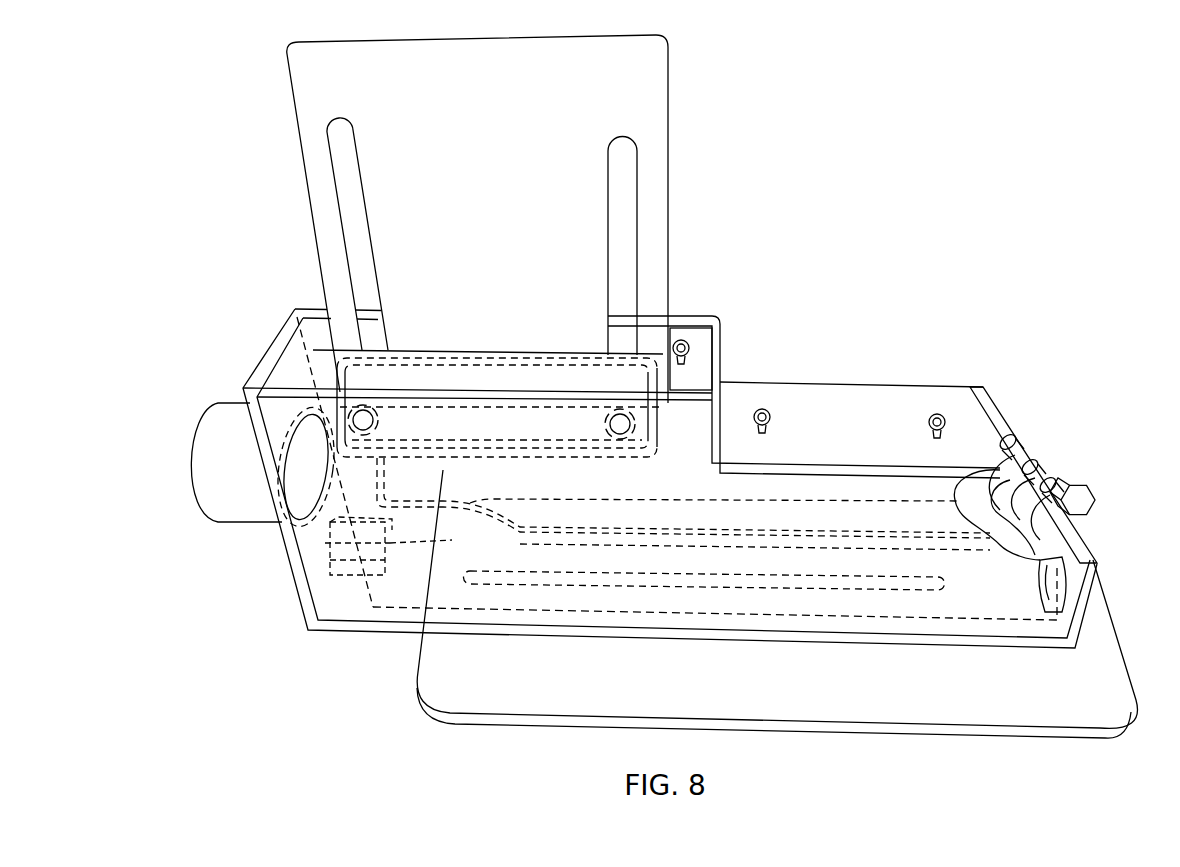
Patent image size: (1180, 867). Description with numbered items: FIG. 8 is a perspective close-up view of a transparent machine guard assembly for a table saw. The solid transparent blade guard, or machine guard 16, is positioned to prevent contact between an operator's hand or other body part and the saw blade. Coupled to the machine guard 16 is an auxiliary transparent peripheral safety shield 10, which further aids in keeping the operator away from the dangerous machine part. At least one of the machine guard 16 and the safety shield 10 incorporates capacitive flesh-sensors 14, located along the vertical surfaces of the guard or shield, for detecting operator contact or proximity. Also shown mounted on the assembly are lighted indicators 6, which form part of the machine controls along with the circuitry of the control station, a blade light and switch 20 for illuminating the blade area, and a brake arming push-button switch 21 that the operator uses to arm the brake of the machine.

The lighted indicators 6 is at (1032, 453).
The brake arming push-button switch 21 is at (1093, 483).
The blade light and switch 20 is at (1055, 590).
The machine guard 16 is at (443, 472).
The auxiliary transparent peripheral safety shield 10 is at (675, 680).
The capacitive flesh-sensors 14 is at (840, 730).